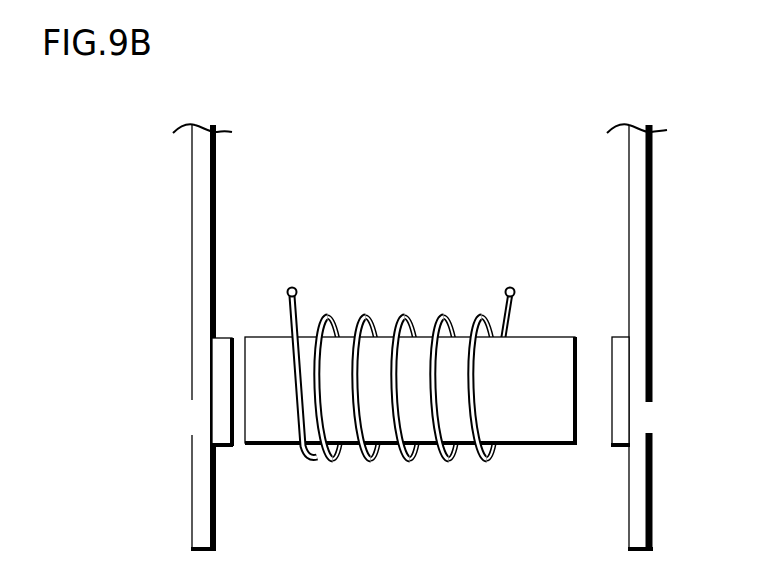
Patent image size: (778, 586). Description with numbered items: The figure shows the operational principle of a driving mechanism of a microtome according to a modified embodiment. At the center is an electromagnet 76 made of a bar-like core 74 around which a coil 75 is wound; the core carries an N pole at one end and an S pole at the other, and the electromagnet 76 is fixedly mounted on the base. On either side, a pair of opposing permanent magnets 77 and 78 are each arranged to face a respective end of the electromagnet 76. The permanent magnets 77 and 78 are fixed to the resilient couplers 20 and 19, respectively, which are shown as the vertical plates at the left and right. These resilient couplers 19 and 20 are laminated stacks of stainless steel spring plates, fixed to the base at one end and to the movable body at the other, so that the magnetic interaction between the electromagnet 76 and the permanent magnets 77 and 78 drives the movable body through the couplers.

The resilient coupler 19 is at (645, 205).
The resilient coupler 20 is at (197, 219).
The bar-like core 74 is at (432, 448).
The coil 75 is at (404, 320).
The electromagnet 76 is at (342, 345).
The permanent magnet 77 is at (218, 455).
The permanent magnet 78 is at (618, 448).